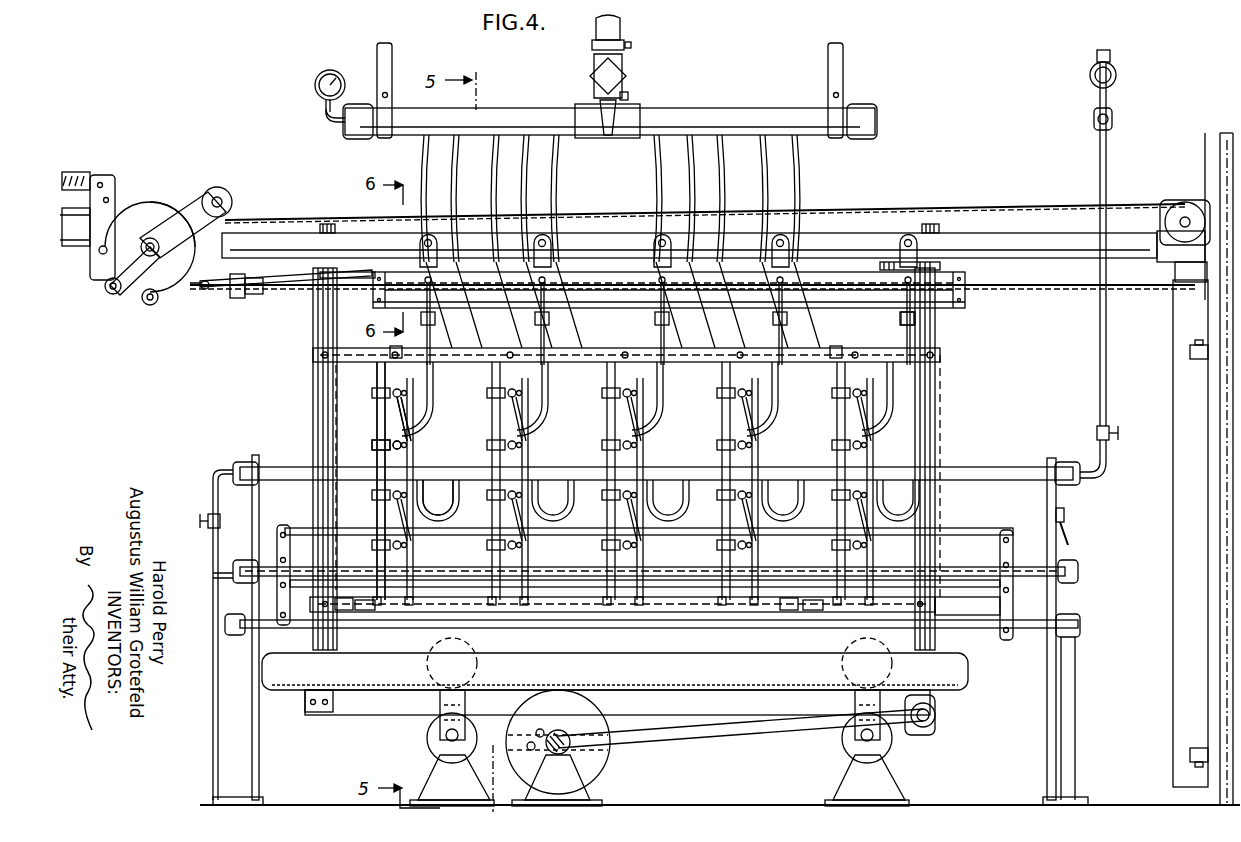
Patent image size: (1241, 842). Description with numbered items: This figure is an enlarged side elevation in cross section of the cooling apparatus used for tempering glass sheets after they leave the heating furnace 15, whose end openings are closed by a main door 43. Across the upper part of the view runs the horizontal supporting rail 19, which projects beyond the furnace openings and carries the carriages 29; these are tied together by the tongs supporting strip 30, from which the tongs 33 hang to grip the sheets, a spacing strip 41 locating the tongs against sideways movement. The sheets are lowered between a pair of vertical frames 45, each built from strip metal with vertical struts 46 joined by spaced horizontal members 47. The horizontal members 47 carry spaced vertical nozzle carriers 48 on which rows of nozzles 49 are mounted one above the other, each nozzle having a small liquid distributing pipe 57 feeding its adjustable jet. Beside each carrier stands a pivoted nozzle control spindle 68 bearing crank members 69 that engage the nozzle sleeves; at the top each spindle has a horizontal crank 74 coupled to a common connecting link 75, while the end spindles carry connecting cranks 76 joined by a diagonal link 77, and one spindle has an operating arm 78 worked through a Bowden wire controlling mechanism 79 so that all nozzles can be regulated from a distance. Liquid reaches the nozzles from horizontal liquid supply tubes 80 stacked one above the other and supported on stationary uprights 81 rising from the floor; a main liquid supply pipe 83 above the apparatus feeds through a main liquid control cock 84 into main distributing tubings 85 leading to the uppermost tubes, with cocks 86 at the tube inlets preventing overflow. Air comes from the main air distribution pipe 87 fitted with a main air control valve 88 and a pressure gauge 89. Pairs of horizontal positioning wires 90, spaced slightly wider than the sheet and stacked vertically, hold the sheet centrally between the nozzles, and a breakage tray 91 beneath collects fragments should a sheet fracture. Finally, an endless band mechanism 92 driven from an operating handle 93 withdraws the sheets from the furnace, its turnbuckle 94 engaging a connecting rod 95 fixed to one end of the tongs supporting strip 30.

The heating furnace 15 is at (1218, 635).
The horizontal supporting rail 19 is at (598, 233).
The carriages 29 is at (905, 262).
The tongs supporting strip 30 is at (818, 272).
The tongs 33 is at (535, 325).
The spacing strip 41 is at (760, 300).
The main door 43 is at (1190, 597).
The vertical frames 45 is at (328, 224).
The vertical struts 46 is at (313, 333).
The horizontal members 47 is at (313, 355).
The nozzle carriers 48 is at (640, 383).
The nozzles 49 is at (372, 444).
The liquid distributing pipe 57 is at (520, 410).
The nozzle control spindles 68 is at (375, 404).
The crank members 69 is at (500, 395).
The horizontal crank 74 is at (372, 356).
The connecting link 75 is at (615, 348).
The connecting cranks 76 is at (370, 612).
The link 77 is at (345, 612).
The operating arm 78 is at (900, 335).
The controlling mechanism 79 is at (1065, 515).
The liquid supply tubes 80 is at (338, 560).
The stationary uprights 81 is at (258, 500).
The main liquid supply pipe 83 is at (1110, 53).
The main liquid control cock 84 is at (1110, 78).
The main distributing tubings 85 is at (1112, 119).
The cocks 86 is at (208, 505).
The main air distribution pipe 87 is at (515, 112).
The main air control valve 88 is at (590, 52).
The pressure gauge 89 is at (336, 70).
The positioning wires 90 is at (440, 555).
The breakage tray 91 is at (545, 680).
The endless band mechanism 92 is at (160, 200).
The operating handle 93 is at (160, 300).
The turnbuckle 94 is at (240, 298).
The connecting rod 95 is at (292, 282).